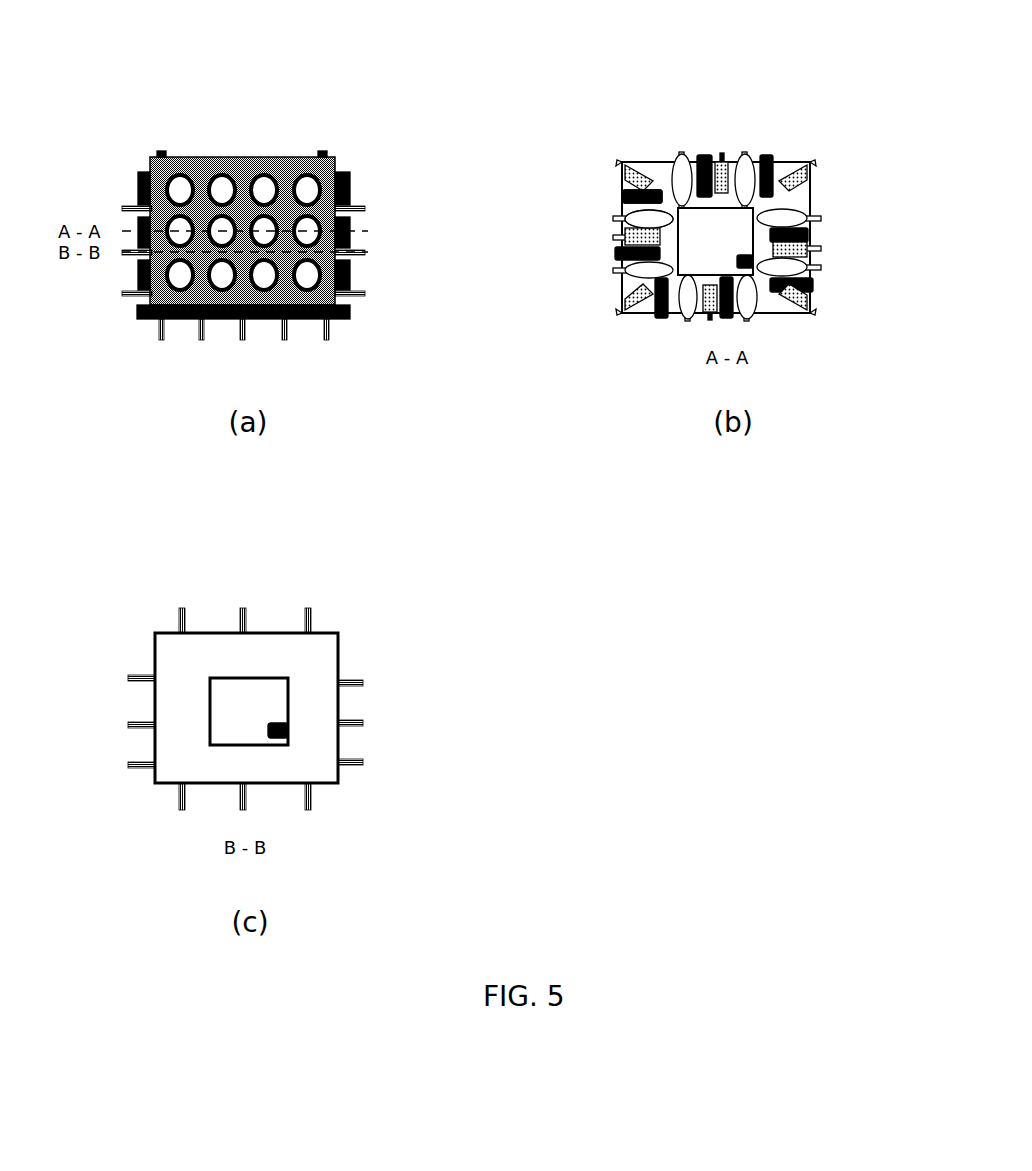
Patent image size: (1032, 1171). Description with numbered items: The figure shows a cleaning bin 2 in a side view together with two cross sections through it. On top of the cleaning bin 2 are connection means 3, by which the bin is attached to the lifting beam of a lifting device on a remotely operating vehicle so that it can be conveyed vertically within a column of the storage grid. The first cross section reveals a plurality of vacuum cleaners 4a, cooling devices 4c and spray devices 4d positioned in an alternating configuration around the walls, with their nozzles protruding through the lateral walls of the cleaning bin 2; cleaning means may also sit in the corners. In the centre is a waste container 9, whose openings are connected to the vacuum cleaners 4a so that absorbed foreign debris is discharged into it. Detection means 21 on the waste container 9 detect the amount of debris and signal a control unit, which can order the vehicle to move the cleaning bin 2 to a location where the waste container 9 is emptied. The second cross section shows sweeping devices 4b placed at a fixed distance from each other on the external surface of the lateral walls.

In FIG. 5a, the cleaning bin 2 is at (251, 117).
In FIG. 5b, the cleaning bin 2 is at (725, 117).
In FIG. 5c, the cleaning bin 2 is at (265, 607).
In FIG. 5a, the connection means 3 is at (159, 154).
In FIG. 5b, the vacuum cleaner 4a is at (620, 218).
In FIG. 5c, the sweeping device 4b is at (140, 727).
In FIG. 5b, the cooling device 4c is at (624, 305).
In FIG. 5b, the spray device 4d is at (620, 197).
In FIG. 5b, the waste container 9 is at (732, 222).
In FIG. 5c, the waste container 9 is at (268, 690).
In FIG. 5b, the detection means 21 is at (753, 257).
In FIG. 5c, the detection means 21 is at (288, 729).